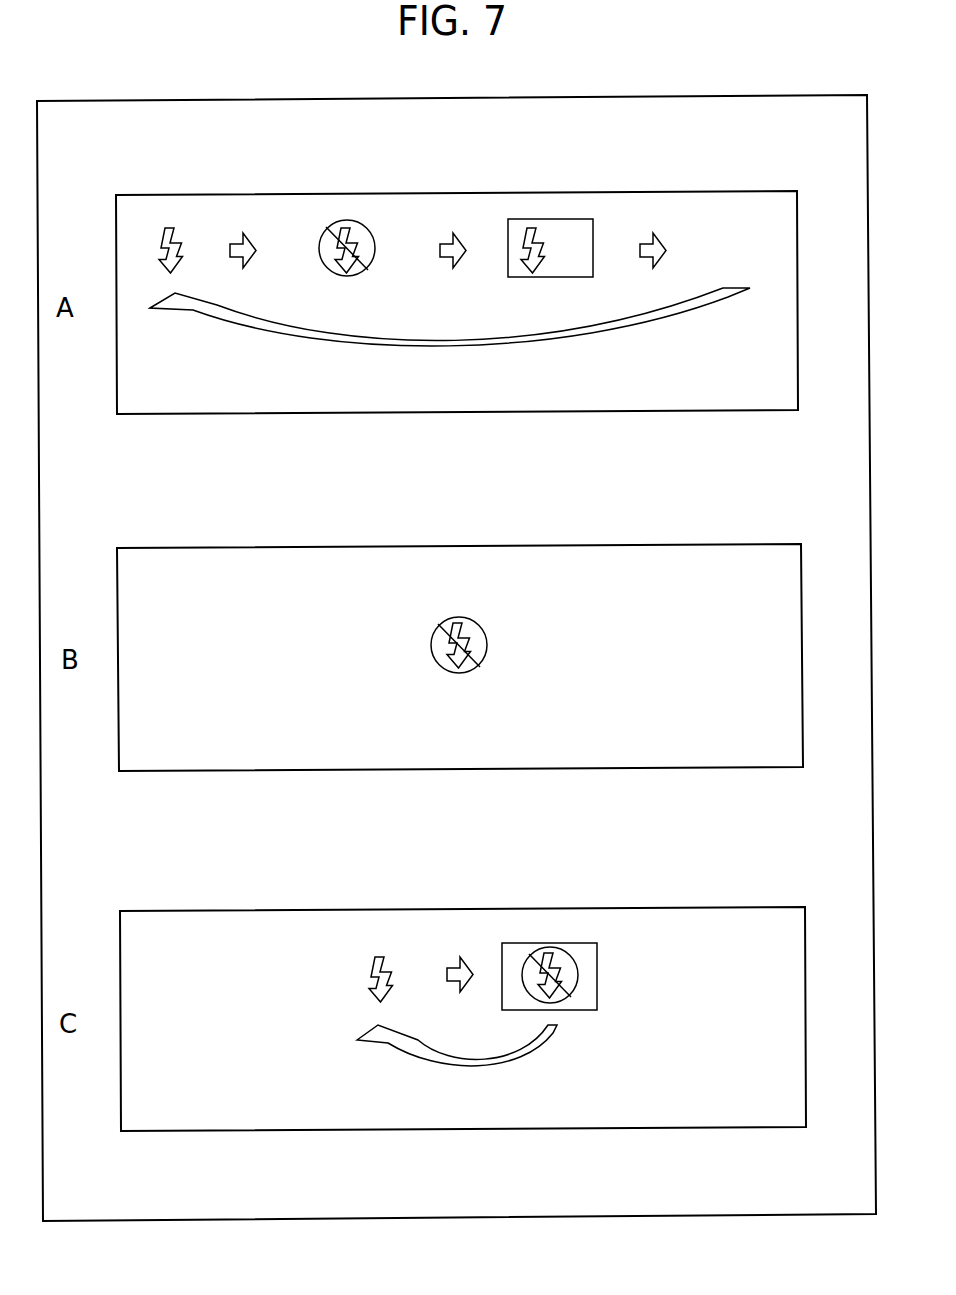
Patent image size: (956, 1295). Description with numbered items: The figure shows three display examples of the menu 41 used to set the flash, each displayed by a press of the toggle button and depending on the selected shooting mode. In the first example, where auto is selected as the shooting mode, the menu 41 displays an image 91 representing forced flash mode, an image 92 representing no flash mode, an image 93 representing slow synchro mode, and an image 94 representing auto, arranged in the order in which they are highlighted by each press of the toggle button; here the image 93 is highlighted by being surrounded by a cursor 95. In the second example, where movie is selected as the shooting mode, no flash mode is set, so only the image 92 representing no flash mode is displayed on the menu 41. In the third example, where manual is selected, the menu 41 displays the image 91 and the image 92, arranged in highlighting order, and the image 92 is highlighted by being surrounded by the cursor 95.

The menu 41 is at (799, 300).
The image representing forced flash mode 91 is at (172, 203).
The image representing no flash mode 92 is at (346, 203).
The image representing slow synchro mode 93 is at (528, 203).
The image representing auto 94 is at (738, 198).
The cursor 95 is at (567, 219).